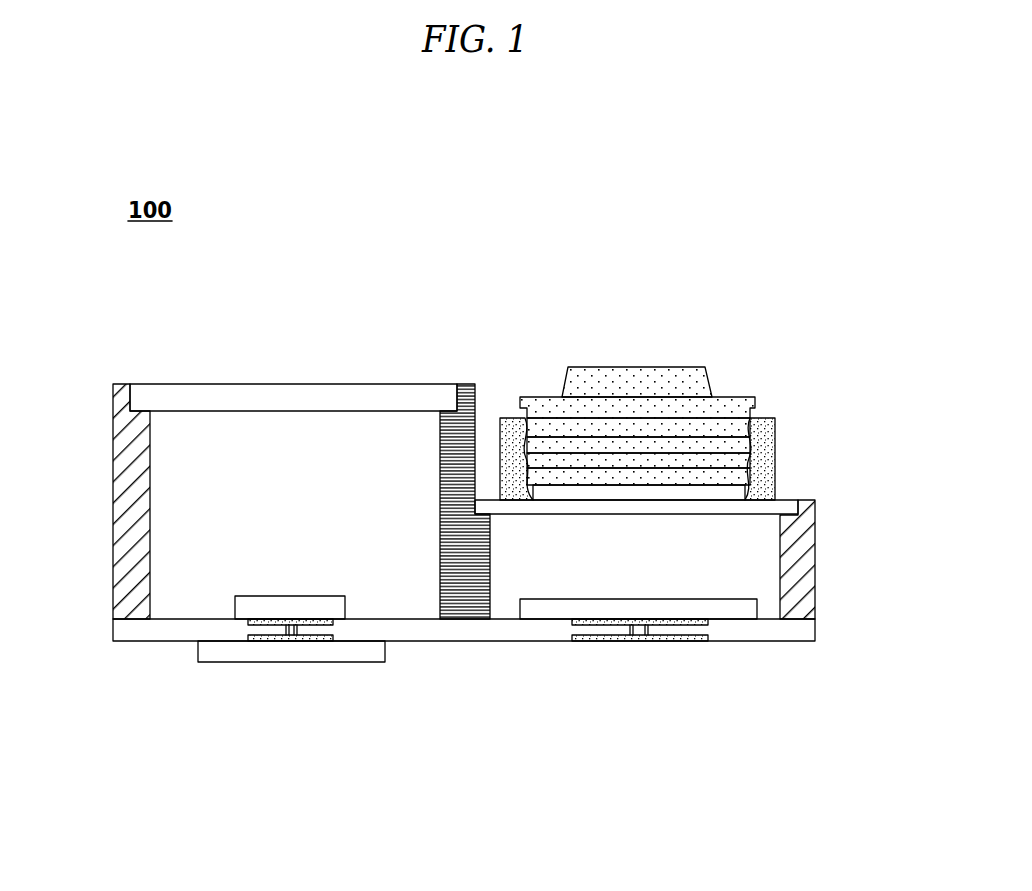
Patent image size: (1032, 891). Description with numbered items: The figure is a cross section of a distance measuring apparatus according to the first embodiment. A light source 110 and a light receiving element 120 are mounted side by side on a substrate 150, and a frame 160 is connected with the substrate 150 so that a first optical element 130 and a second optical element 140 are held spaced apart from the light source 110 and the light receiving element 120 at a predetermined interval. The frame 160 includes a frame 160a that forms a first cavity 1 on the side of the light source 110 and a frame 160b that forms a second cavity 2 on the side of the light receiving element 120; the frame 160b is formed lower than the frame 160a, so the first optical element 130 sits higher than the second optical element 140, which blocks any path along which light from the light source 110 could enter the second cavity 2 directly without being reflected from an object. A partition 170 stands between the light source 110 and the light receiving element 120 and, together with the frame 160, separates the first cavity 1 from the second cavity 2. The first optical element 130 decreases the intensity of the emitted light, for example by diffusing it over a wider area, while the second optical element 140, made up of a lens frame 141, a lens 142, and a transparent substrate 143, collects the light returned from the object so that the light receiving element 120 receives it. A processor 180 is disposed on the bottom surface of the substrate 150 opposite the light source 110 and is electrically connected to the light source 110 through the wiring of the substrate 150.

The first cavity 1 is at (188, 438).
The second cavity 2 is at (742, 573).
The light source 110 is at (235, 607).
The light receiving element 120 is at (757, 608).
The first optical element 130 is at (347, 384).
The second optical element 140 is at (702, 375).
The lens frame 141 is at (778, 432).
The lens 142 is at (725, 395).
The transparent substrate 143 is at (813, 501).
The substrate 150 is at (505, 642).
The frame 160 is at (472, 501).
The frame 160a is at (113, 560).
The frame 160b is at (815, 540).
The partition 170 is at (465, 384).
The processor 180 is at (290, 662).